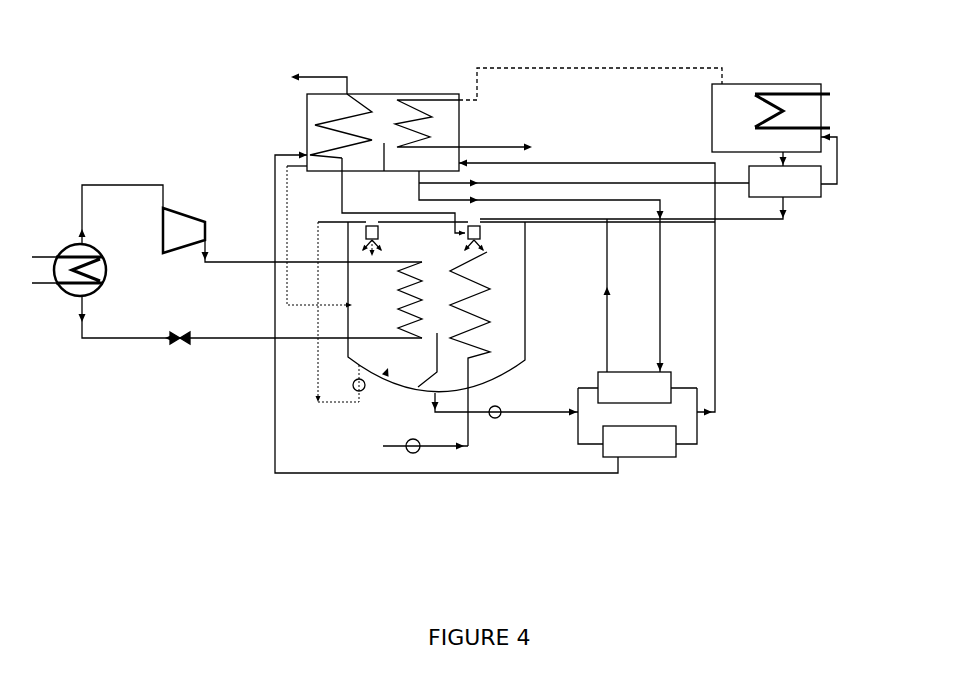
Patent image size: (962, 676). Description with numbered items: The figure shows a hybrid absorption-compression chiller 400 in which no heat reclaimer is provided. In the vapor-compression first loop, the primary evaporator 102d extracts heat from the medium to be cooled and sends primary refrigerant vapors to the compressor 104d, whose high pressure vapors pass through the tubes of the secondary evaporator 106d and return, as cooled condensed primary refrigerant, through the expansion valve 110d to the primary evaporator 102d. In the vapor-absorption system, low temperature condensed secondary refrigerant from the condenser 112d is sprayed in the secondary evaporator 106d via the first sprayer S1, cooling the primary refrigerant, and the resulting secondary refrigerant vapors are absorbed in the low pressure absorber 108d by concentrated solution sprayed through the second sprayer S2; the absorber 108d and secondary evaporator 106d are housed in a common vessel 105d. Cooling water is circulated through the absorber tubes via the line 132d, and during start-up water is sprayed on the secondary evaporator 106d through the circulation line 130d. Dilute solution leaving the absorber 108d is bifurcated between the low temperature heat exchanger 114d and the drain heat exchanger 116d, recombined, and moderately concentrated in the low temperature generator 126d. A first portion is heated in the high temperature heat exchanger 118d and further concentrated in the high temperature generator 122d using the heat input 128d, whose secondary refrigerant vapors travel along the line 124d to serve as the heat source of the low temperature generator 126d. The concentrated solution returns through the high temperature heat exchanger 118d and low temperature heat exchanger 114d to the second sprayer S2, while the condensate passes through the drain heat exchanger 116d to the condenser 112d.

The hybrid chiller 400 is at (848, 72).
The primary evaporator 102d is at (62, 294).
The compressor 104d is at (183, 205).
The tank / vessel 105d is at (531, 284).
The secondary evaporator 106d is at (388, 374).
The low pressure absorber 108d is at (512, 343).
The expansion valve 110d is at (187, 350).
The condenser 112d is at (300, 117).
The low temperature heat exchanger 114d is at (632, 366).
The drain heat exchanger 116d is at (645, 488).
The high temperature heat exchanger 118d is at (812, 202).
The high temperature generator 122d is at (742, 76).
The line 124d is at (571, 63).
The low temperature generator 126d is at (414, 89).
The heat input 128d is at (830, 116).
The circulation line 130d is at (312, 406).
The line 132d is at (435, 452).
The first sprayer S1 is at (360, 234).
The second sprayer S2 is at (486, 233).